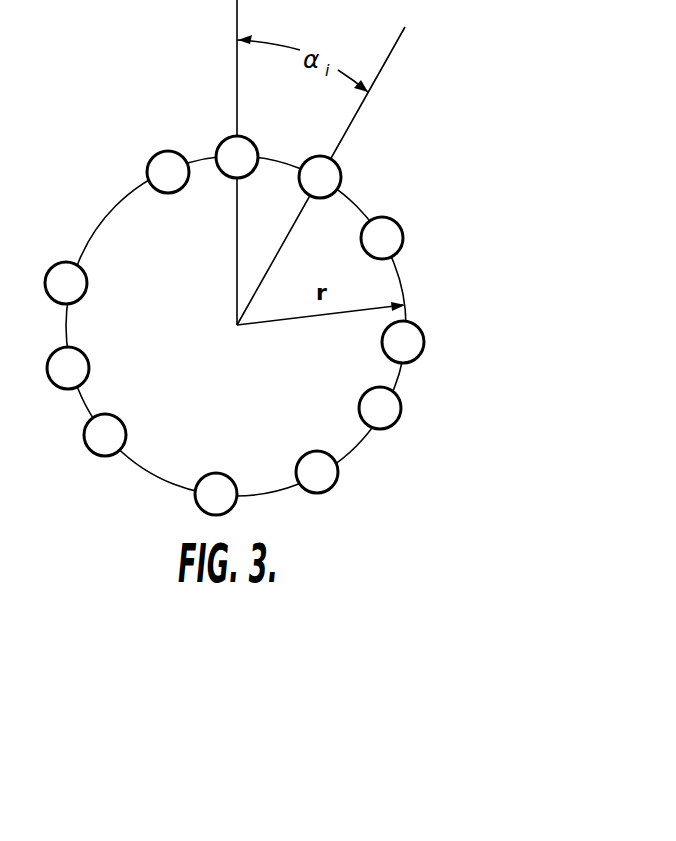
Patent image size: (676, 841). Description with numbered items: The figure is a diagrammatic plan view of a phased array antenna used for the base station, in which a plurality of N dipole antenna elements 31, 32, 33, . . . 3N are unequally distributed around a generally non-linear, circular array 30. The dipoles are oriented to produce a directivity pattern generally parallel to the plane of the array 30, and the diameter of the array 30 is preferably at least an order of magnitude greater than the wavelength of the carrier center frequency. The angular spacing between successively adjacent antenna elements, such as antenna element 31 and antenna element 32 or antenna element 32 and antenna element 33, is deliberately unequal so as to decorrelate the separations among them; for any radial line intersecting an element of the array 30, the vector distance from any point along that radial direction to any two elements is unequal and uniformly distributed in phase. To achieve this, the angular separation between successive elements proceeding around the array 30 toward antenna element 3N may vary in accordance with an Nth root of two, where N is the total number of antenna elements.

The circular array 30 is at (472, 295).
The antenna element 31 is at (222, 138).
The antenna element 32 is at (341, 166).
The antenna element 33 is at (399, 223).
The antenna element 3N is at (156, 149).